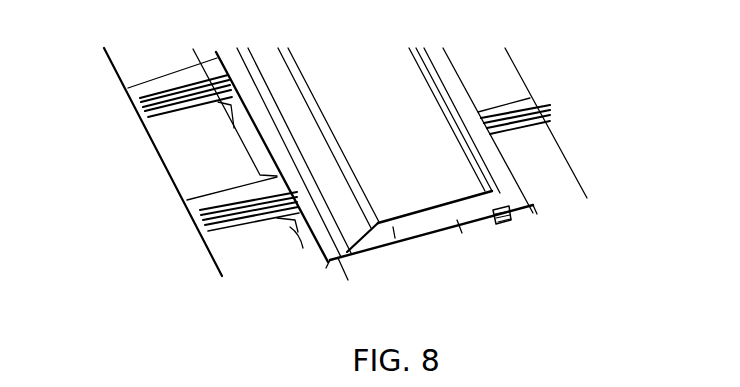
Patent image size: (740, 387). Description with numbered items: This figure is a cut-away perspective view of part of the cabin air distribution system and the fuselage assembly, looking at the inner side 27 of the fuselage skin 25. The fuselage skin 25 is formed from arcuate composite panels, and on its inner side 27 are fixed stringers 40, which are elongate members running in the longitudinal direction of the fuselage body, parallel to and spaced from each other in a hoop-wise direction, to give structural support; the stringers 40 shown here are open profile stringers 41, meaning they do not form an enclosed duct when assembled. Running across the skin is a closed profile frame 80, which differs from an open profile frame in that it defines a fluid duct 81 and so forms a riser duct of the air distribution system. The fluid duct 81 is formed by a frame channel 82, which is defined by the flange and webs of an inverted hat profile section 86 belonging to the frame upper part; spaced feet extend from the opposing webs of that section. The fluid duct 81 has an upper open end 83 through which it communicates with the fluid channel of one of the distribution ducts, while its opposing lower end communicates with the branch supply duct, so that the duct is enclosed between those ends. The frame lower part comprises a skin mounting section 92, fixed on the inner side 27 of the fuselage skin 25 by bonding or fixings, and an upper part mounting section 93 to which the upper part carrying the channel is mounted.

The fuselage skin 25 is at (567, 165).
The inner side 27 is at (172, 147).
The stringer 40 is at (177, 78).
The open profile stringer 41 is at (131, 100).
The closed profile frame 80 is at (466, 169).
The fluid duct 81 is at (468, 205).
The frame channel 82 is at (393, 228).
The upper open end 83 is at (430, 220).
The inverted hat profile section 86 is at (367, 75).
The skin mounting section 92 is at (305, 250).
The upper part mounting section 93 is at (343, 266).